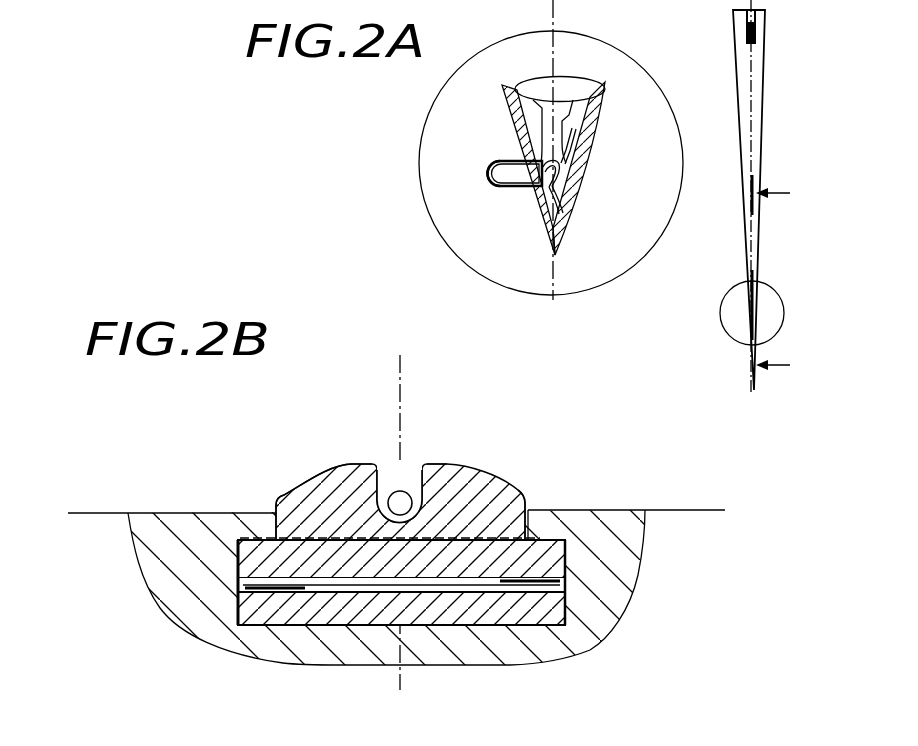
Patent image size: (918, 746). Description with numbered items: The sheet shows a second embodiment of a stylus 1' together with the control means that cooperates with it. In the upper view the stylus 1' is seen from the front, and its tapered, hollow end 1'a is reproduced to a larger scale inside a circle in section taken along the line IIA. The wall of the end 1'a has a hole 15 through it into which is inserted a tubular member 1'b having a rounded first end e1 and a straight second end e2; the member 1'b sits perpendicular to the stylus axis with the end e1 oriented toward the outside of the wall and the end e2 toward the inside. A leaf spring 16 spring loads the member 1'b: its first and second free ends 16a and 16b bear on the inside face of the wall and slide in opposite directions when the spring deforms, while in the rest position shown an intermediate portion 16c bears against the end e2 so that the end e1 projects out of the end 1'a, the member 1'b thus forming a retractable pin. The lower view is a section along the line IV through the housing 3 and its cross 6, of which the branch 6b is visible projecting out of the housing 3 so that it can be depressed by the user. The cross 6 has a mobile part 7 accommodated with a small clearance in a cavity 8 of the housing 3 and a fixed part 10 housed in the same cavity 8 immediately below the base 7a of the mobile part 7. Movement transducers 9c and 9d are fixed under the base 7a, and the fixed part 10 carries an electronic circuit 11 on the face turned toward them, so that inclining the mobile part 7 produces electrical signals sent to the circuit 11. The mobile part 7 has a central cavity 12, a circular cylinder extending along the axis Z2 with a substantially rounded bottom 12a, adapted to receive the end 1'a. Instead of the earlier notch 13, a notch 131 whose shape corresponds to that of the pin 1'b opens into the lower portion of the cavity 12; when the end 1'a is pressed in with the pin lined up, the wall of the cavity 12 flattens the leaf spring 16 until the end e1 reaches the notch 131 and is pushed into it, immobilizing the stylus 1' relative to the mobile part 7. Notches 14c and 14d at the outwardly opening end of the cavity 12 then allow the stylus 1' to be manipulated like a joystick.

In FIG. 2A, the stylus 1' is at (764, 197).
In FIG. 2A, the end of the stylus 1'a is at (549, 174).
In FIG. 2A, the tubular member 1'b is at (492, 145).
In FIG. 2A, the rounded first end e1 is at (487, 173).
In FIG. 2A, the straight second end e2 is at (528, 92).
In FIG. 2A, the hole 15 is at (484, 164).
In FIG. 2A, the leaf spring 16 is at (569, 96).
In FIG. 2A, the first free end of the leaf spring 16a is at (592, 123).
In FIG. 2A, the second free end of the leaf spring 16b is at (553, 168).
In FIG. 2A, the intermediate portion of the leaf spring 16c is at (570, 204).
In FIG. 2A, the section line IIA— IIA is at (793, 279).
In FIG. 2B, the section line IV— IV is at (396, 383).
In FIG. 2B, the axis Z2 is at (398, 508).
In FIG. 2B, the housing 3 is at (552, 625).
In FIG. 2B, the cross 6 is at (379, 559).
In FIG. 2B, the branch of the cross 6b is at (298, 503).
In FIG. 2B, the mobile part 7 is at (415, 473).
In FIG. 2B, the base 7a is at (250, 558).
In FIG. 2B, the cavity of the housing 8 is at (273, 507).
In FIG. 2B, the movement transducer 9c is at (250, 586).
In FIG. 2B, the movement transducer 9d is at (568, 583).
In FIG. 2B, the fixed part 10 is at (545, 605).
In FIG. 2B, the electronic circuit 11 is at (322, 588).
In FIG. 2B, the cavity 12 is at (392, 487).
In FIG. 2B, the rounded bottom 12a is at (540, 537).
In FIG. 2B, the notch 131 is at (562, 508).
In FIG. 2B, the notch 13 is at (527, 497).
In FIG. 2B, the notch 14c is at (366, 466).
In FIG. 2B, the notch 14d is at (440, 465).